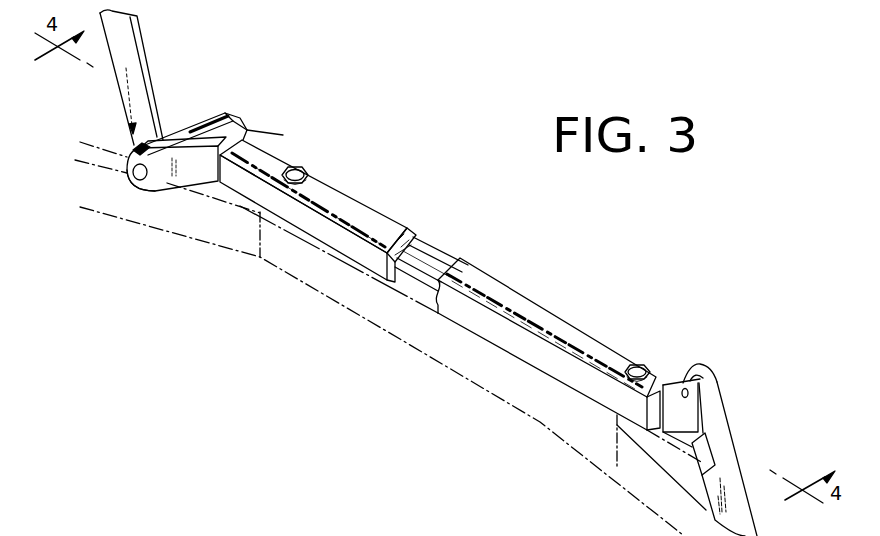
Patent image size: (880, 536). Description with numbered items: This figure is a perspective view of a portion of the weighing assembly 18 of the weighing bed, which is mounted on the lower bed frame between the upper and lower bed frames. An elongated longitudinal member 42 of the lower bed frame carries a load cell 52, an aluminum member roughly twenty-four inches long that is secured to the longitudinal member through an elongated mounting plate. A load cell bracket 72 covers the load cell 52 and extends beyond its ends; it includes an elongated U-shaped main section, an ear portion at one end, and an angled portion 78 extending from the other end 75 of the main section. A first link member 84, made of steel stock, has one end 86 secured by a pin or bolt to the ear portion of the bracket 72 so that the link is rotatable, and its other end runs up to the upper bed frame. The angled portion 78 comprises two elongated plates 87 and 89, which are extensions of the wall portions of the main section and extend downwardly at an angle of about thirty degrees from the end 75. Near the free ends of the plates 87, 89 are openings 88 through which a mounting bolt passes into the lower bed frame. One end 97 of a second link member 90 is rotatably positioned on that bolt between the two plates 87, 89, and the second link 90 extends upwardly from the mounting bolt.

The weighing assembly 18 is at (440, 271).
The longitudinal member 42 is at (425, 345).
The load cell 52 is at (424, 262).
The load cell bracket 72 is at (538, 306).
The other end of main section 75 is at (246, 133).
The angled portion 78 is at (204, 112).
The first link member 84 is at (731, 435).
The one end of link 86 is at (712, 378).
The elongated plate 87 is at (243, 126).
The openings 88 is at (140, 191).
The elongated plate 89 is at (195, 163).
The second link member 90 is at (132, 52).
The one end of second link member 97 is at (135, 148).